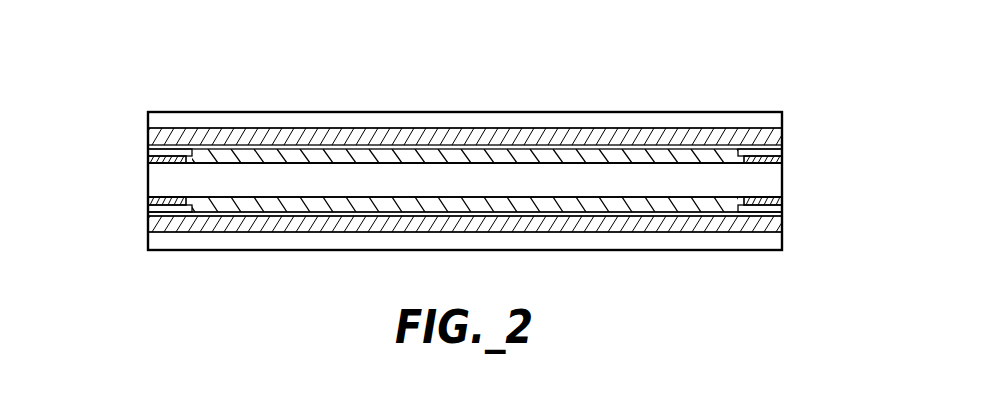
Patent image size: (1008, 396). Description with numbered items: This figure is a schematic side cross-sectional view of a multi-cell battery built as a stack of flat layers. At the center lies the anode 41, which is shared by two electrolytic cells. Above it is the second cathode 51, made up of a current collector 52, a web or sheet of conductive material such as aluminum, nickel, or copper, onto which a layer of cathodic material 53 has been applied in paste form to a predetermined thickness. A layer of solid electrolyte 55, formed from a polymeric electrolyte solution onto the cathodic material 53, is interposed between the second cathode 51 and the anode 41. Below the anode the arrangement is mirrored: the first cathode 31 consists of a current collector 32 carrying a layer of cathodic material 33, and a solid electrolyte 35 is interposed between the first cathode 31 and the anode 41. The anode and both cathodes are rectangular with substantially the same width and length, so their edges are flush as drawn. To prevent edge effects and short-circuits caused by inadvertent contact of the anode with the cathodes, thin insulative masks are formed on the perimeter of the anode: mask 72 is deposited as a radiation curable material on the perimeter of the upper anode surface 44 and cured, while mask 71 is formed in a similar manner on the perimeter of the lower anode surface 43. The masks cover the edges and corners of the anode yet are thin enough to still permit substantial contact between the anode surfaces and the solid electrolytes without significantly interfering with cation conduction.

The second cathode 51 is at (148, 142).
The current collector 52 is at (258, 122).
The cathodic material 53 is at (770, 142).
The solid electrolyte 55 is at (770, 154).
The mask 72 is at (148, 158).
The mask 71 is at (148, 201).
The anode 41 is at (465, 180).
The surface 43 is at (258, 197).
The surface 44 is at (598, 165).
The first cathode 31 is at (148, 245).
The current collector 32 is at (433, 240).
The cathodic material 33 is at (780, 228).
The solid electrolyte 35 is at (780, 213).